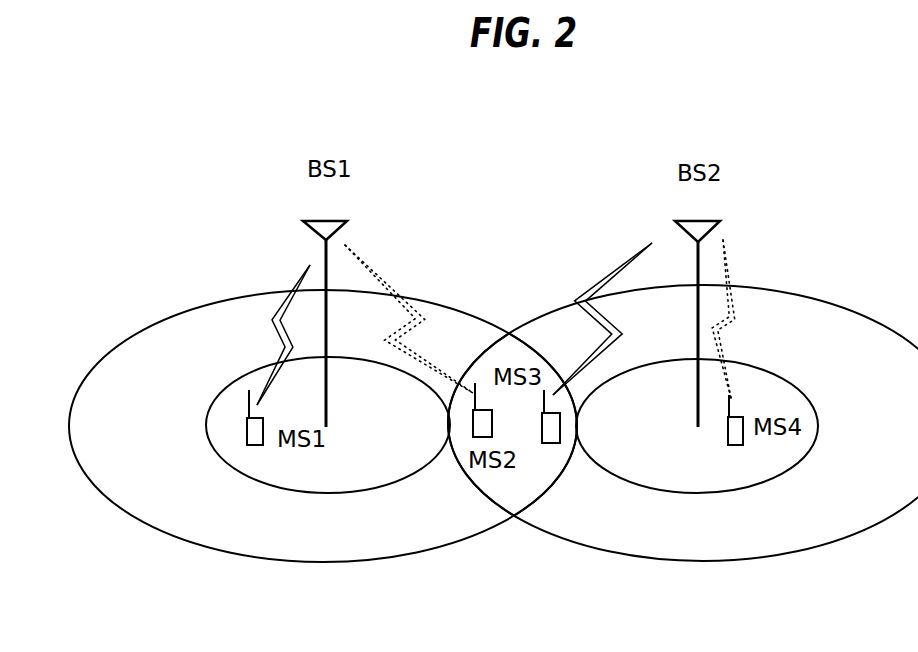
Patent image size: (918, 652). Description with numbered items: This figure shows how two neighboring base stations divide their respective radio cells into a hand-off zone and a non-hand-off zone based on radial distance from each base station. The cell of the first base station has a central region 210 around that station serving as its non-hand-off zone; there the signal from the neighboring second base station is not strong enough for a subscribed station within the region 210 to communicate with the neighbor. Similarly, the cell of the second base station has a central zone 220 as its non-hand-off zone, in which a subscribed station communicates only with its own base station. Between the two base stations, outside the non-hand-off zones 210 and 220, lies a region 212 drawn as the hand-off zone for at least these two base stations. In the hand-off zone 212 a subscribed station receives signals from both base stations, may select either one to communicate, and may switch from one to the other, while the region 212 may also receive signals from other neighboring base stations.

The central region (non-hand-off zone of BS1) 210 is at (227, 400).
The central zone (non-hand-off zone of BS2) 220 is at (767, 392).
The hand-off zone 212 is at (512, 478).